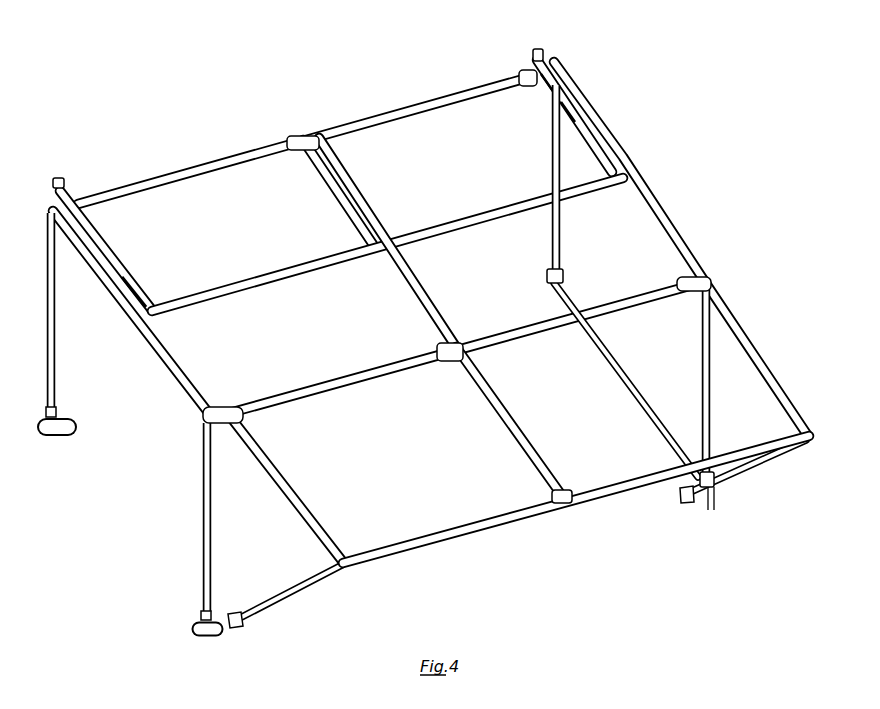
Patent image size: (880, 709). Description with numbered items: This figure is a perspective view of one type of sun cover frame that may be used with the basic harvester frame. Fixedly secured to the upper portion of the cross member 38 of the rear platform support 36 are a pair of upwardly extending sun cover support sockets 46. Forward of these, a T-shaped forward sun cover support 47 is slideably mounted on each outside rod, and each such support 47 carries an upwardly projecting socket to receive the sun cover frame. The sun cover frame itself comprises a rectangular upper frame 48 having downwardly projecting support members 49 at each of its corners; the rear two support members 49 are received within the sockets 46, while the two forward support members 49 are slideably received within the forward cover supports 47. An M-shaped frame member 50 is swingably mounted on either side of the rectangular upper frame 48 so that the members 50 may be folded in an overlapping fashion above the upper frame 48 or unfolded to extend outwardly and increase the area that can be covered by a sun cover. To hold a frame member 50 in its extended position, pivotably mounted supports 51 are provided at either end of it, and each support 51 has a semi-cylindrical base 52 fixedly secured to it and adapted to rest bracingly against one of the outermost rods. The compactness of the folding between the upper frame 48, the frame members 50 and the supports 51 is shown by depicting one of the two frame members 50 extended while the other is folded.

The rear platform support 36 is at (610, 343).
The cross member 38 is at (633, 388).
The sun cover support socket 46 is at (558, 273).
The forward sun cover support 47 is at (60, 420).
The upper frame 48 is at (433, 346).
The support member 49 is at (52, 373).
The M-shaped frame member 50 is at (341, 202).
The pivotably mounted support 51 is at (125, 278).
The semi-cylindrical base 52 is at (60, 178).